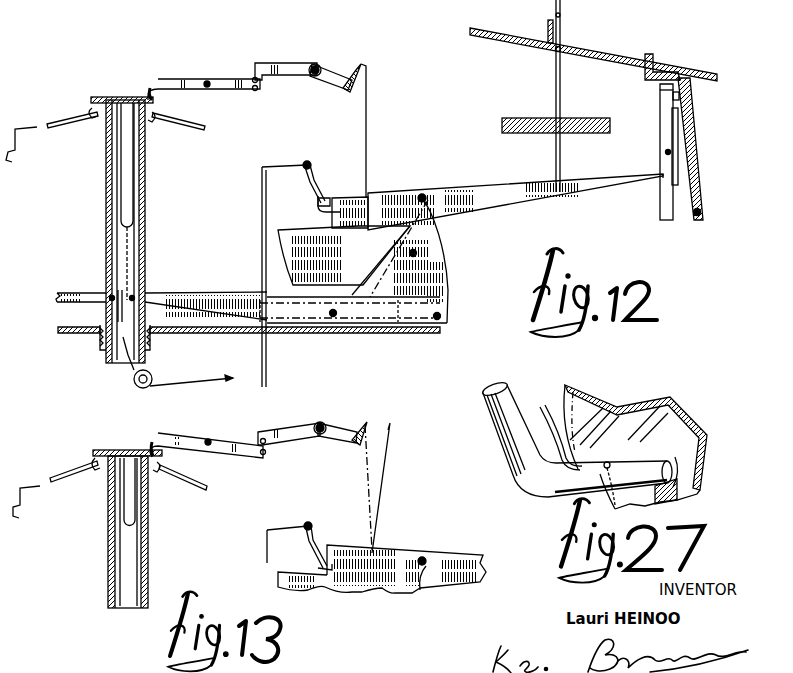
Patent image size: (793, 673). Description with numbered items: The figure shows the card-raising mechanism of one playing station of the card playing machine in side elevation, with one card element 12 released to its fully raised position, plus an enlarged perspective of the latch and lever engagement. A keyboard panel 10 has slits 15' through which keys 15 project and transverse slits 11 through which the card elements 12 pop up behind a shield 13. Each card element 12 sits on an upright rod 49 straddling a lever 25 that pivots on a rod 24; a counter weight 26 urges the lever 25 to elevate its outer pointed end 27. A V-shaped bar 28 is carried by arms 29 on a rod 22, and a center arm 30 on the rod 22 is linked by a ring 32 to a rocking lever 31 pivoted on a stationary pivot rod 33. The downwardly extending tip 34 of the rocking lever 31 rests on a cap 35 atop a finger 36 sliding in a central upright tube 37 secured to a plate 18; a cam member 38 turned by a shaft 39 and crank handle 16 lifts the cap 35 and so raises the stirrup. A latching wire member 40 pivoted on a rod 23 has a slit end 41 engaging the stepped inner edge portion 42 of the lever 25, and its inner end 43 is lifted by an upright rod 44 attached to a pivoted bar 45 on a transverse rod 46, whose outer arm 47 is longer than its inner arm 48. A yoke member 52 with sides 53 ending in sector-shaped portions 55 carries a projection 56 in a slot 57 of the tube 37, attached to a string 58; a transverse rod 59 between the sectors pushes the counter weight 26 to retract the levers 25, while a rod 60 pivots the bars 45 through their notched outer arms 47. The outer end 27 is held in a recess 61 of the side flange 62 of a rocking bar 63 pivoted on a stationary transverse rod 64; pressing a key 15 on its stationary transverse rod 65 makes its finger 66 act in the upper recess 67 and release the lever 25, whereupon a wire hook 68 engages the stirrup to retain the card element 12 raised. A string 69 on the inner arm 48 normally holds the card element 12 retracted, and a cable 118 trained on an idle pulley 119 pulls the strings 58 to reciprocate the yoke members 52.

In FIG. 12, the panel 10 is at (607, 52).
In FIG. 12, the transverse slit 11 is at (562, 48).
In FIG. 12, the card element 12 is at (558, 15).
In FIG. 12, the shield 13 is at (546, 24).
In FIG. 12, the key 15 is at (630, 78).
In FIG. 12, the slit 15' is at (670, 59).
In FIG. 12, the crank handle 16 is at (10, 160).
In FIG. 13, the crank handle 16 is at (26, 506).
In FIG. 12, the square plate 18 is at (425, 335).
In FIG. 12, the rod 22 is at (310, 76).
In FIG. 13, the rod 22 is at (315, 433).
In FIG. 12, the rod 23 is at (308, 162).
In FIG. 13, the rod 23 is at (310, 522).
In FIG. 12, the rod 24 is at (422, 195).
In FIG. 13, the rod 24 is at (422, 557).
In FIG. 12, the lever 25 is at (542, 190).
In FIG. 13, the lever 25 is at (460, 578).
In FIG. 27, the lever 25 is at (650, 417).
In FIG. 12, the counter weight 26 is at (290, 233).
In FIG. 13, the counter weight 26 is at (320, 580).
In FIG. 12, the outer pointed end 27 is at (650, 175).
In FIG. 12, the V-shaped bar 28 is at (345, 92).
In FIG. 13, the V-shaped bar 28 is at (355, 442).
In FIG. 12, the arm 29 is at (335, 70).
In FIG. 13, the arm 29 is at (338, 428).
In FIG. 12, the center arm 30 is at (287, 62).
In FIG. 13, the center arm 30 is at (290, 432).
In FIG. 12, the rocking lever 31 is at (235, 92).
In FIG. 13, the rocking lever 31 is at (225, 450).
In FIG. 12, the ring 32 is at (252, 78).
In FIG. 13, the ring 32 is at (262, 440).
In FIG. 12, the stationary pivot rod 33 is at (205, 80).
In FIG. 13, the stationary pivot rod 33 is at (208, 440).
In FIG. 12, the downwardly extending tip 34 is at (142, 90).
In FIG. 13, the downwardly extending tip 34 is at (152, 442).
In FIG. 12, the cap 35 is at (115, 97).
In FIG. 13, the cap 35 is at (123, 447).
In FIG. 12, the finger 36 is at (117, 198).
In FIG. 13, the finger 36 is at (125, 515).
In FIG. 12, the central upright tube 37 is at (106, 168).
In FIG. 13, the central upright tube 37 is at (108, 558).
In FIG. 12, the cam member 38 is at (91, 111).
In FIG. 13, the cam member 38 is at (93, 462).
In FIG. 12, the shaft 39 is at (75, 125).
In FIG. 13, the shaft 39 is at (70, 468).
In FIG. 12, the latching wire member 40 is at (315, 190).
In FIG. 13, the latching wire member 40 is at (318, 545).
In FIG. 27, the latching wire member 40 is at (508, 467).
In FIG. 12, the slit end 41 is at (330, 197).
In FIG. 13, the slit end 41 is at (322, 569).
In FIG. 27, the slit end 41 is at (590, 485).
In FIG. 12, the stepped inner edge portion 42 is at (328, 222).
In FIG. 27, the stepped inner edge portion 42 is at (554, 428).
In FIG. 12, the inner end 43 is at (280, 165).
In FIG. 13, the inner end 43 is at (288, 530).
In FIG. 12, the upright rod 44 is at (262, 252).
In FIG. 13, the upright rod 44 is at (265, 556).
In FIG. 12, the pivoted bar 45 is at (383, 325).
In FIG. 12, the transverse rod 46 is at (333, 316).
In FIG. 12, the outer arm 47 is at (448, 280).
In FIG. 12, the inner arm 48 is at (305, 340).
In FIG. 12, the upright rod 49 is at (556, 90).
In FIG. 12, the yoke member 52 is at (68, 293).
In FIG. 12, the side 53 is at (358, 328).
In FIG. 12, the sector-shaped portion 55 is at (403, 283).
In FIG. 12, the projection 56 is at (98, 298).
In FIG. 12, the slot 57 is at (147, 283).
In FIG. 12, the string 58 is at (118, 365).
In FIG. 12, the transverse rod 59 is at (416, 252).
In FIG. 12, the rod 60 is at (440, 316).
In FIG. 12, the recess 61 is at (662, 210).
In FIG. 12, the side flange 62 is at (697, 120).
In FIG. 12, the rocking bar 63 is at (670, 165).
In FIG. 12, the stationary transverse rod 64 is at (666, 150).
In FIG. 12, the stationary transverse rod 65 is at (699, 212).
In FIG. 12, the finger 66 is at (660, 95).
In FIG. 12, the upper recess 67 is at (688, 95).
In FIG. 12, the wire hook 68 is at (367, 120).
In FIG. 13, the wire hook 68 is at (365, 470).
In FIG. 12, the string 69 is at (268, 345).
In FIG. 12, the cable 118 is at (205, 378).
In FIG. 12, the idle pulley 119 is at (143, 390).